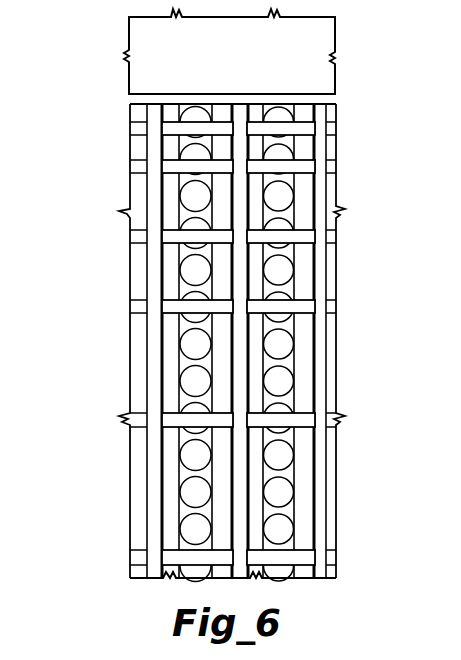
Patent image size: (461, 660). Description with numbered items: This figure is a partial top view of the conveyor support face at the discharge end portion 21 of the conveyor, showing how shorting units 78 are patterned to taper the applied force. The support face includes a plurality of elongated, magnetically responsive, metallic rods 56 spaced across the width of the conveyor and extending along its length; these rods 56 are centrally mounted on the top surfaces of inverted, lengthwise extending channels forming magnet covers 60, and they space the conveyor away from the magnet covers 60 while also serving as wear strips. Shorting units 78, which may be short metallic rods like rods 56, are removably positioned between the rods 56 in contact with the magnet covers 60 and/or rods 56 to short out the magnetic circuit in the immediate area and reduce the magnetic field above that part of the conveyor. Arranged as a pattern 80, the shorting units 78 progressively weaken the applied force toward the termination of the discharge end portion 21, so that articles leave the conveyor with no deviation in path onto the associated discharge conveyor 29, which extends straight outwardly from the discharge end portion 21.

The discharge conveyor 29 is at (313, 45).
The discharge end portion 21 is at (130, 112).
The rods 56 is at (322, 132).
The shorting units 78 is at (300, 235).
The magnet covers 60 is at (303, 350).
The pattern 80 is at (217, 343).